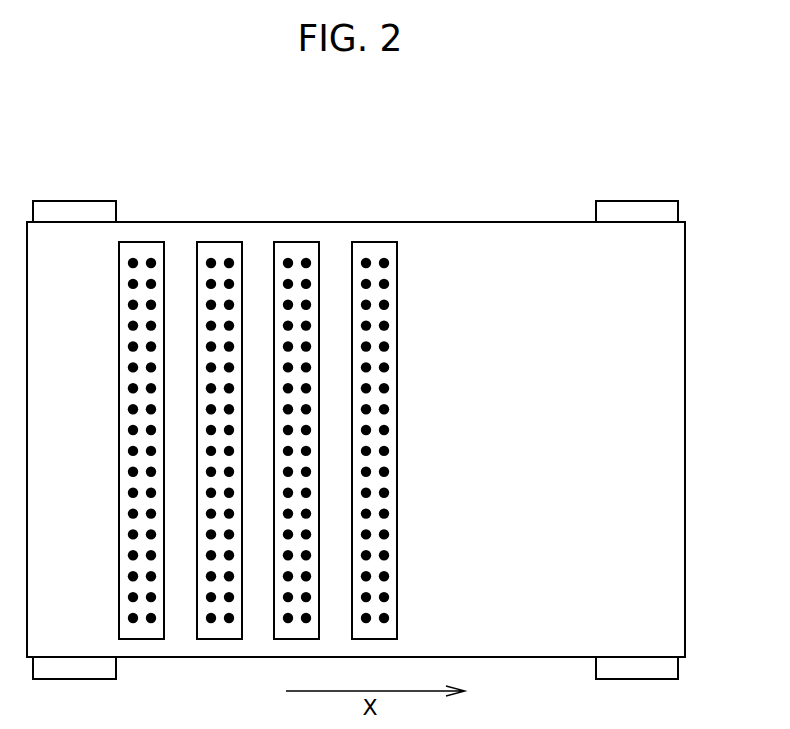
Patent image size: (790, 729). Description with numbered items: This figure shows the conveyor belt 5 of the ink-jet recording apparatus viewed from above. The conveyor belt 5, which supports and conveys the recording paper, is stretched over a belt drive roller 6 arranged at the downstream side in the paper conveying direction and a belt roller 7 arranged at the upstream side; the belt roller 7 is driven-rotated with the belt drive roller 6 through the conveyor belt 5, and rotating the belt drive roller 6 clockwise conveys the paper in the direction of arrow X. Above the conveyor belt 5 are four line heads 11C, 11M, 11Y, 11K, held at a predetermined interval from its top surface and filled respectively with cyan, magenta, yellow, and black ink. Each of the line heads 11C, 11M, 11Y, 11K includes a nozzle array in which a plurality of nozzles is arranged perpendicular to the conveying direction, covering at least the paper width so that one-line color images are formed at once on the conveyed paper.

The conveyor belt 5 is at (675, 601).
The belt drive roller 6 is at (637, 212).
The belt roller 7 is at (76, 210).
The line head 11C is at (147, 246).
The line head 11M is at (220, 246).
The line head 11Y is at (302, 246).
The line head 11K is at (379, 246).